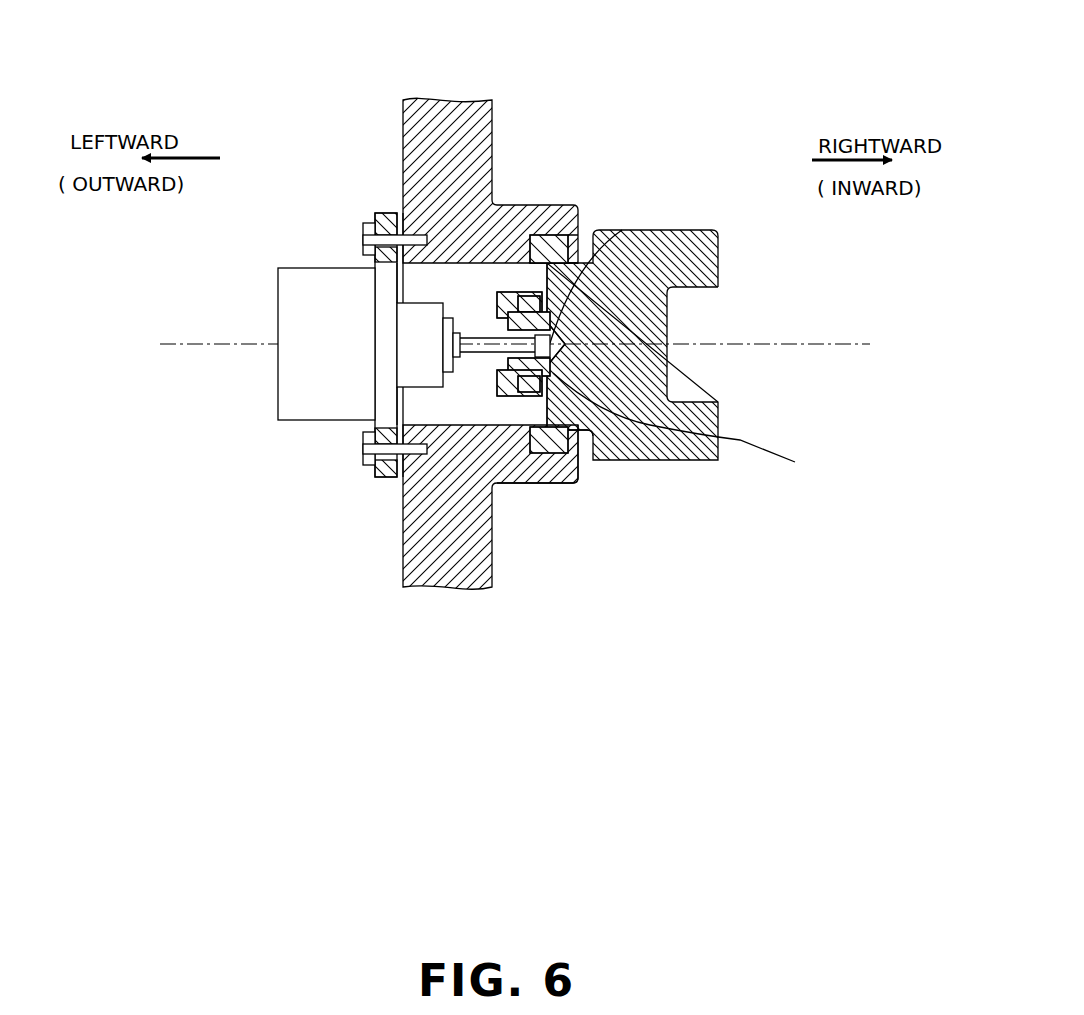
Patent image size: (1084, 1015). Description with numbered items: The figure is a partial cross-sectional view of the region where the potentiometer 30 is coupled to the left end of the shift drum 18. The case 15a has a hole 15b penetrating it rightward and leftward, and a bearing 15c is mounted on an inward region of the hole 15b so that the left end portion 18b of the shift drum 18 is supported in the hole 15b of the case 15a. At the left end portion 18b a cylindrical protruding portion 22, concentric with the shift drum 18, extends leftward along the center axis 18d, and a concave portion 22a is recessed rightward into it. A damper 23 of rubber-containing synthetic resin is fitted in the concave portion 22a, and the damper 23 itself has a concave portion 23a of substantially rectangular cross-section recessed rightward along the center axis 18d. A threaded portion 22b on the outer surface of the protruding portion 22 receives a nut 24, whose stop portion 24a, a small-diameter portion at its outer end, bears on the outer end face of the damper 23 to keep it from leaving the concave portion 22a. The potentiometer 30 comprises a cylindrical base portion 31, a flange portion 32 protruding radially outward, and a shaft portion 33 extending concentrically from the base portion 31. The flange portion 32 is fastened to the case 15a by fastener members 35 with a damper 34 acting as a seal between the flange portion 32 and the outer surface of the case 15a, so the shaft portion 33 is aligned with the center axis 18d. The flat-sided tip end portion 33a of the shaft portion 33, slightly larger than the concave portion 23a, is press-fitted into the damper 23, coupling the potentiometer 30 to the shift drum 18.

The case 15a is at (403, 535).
The hole 15b is at (483, 427).
The bearing 15c is at (556, 428).
The shift drum 18 is at (690, 228).
The left end portion 18b is at (590, 430).
The center axis 18d is at (790, 340).
The protruding portion 22 is at (530, 292).
The concave portion 22a is at (507, 290).
The threaded portion 22b is at (517, 382).
The damper 23 is at (622, 230).
The concave portion 23a is at (572, 245).
The nut 24 is at (523, 398).
The stop portion 24a is at (493, 487).
The potentiometer 30 is at (280, 244).
The base portion 31 is at (288, 383).
The flange portion 32 is at (383, 213).
The shaft portion 33 is at (488, 337).
The tip end portion 33a is at (692, 423).
The damper 34 is at (415, 207).
The fastener members 35 is at (363, 238).